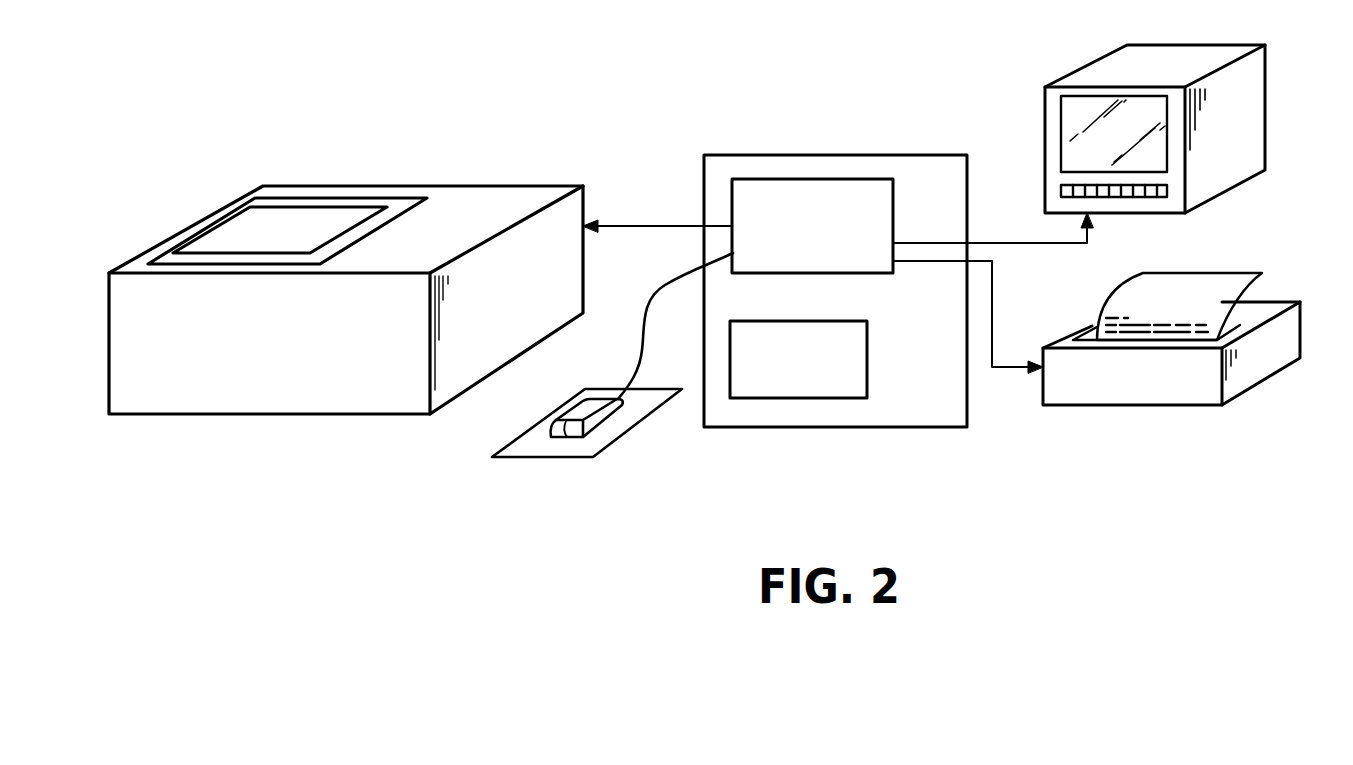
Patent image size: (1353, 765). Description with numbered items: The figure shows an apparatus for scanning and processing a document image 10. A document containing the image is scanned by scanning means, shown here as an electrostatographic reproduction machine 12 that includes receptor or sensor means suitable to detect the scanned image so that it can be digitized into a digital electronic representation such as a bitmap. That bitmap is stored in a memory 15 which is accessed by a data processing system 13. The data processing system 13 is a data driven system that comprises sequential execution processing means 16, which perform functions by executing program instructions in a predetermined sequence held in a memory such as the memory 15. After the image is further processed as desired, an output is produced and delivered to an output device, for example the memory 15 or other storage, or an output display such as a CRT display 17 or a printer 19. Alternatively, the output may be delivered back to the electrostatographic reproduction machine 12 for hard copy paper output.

The document image 10 is at (332, 212).
The electrostatographic reproduction machine 12 is at (518, 175).
The data processing system 13 is at (862, 155).
The memory 15 is at (867, 368).
The sequential execution processing means 16 is at (896, 216).
The CRT display 17 is at (1235, 116).
The printer 19 is at (1247, 365).